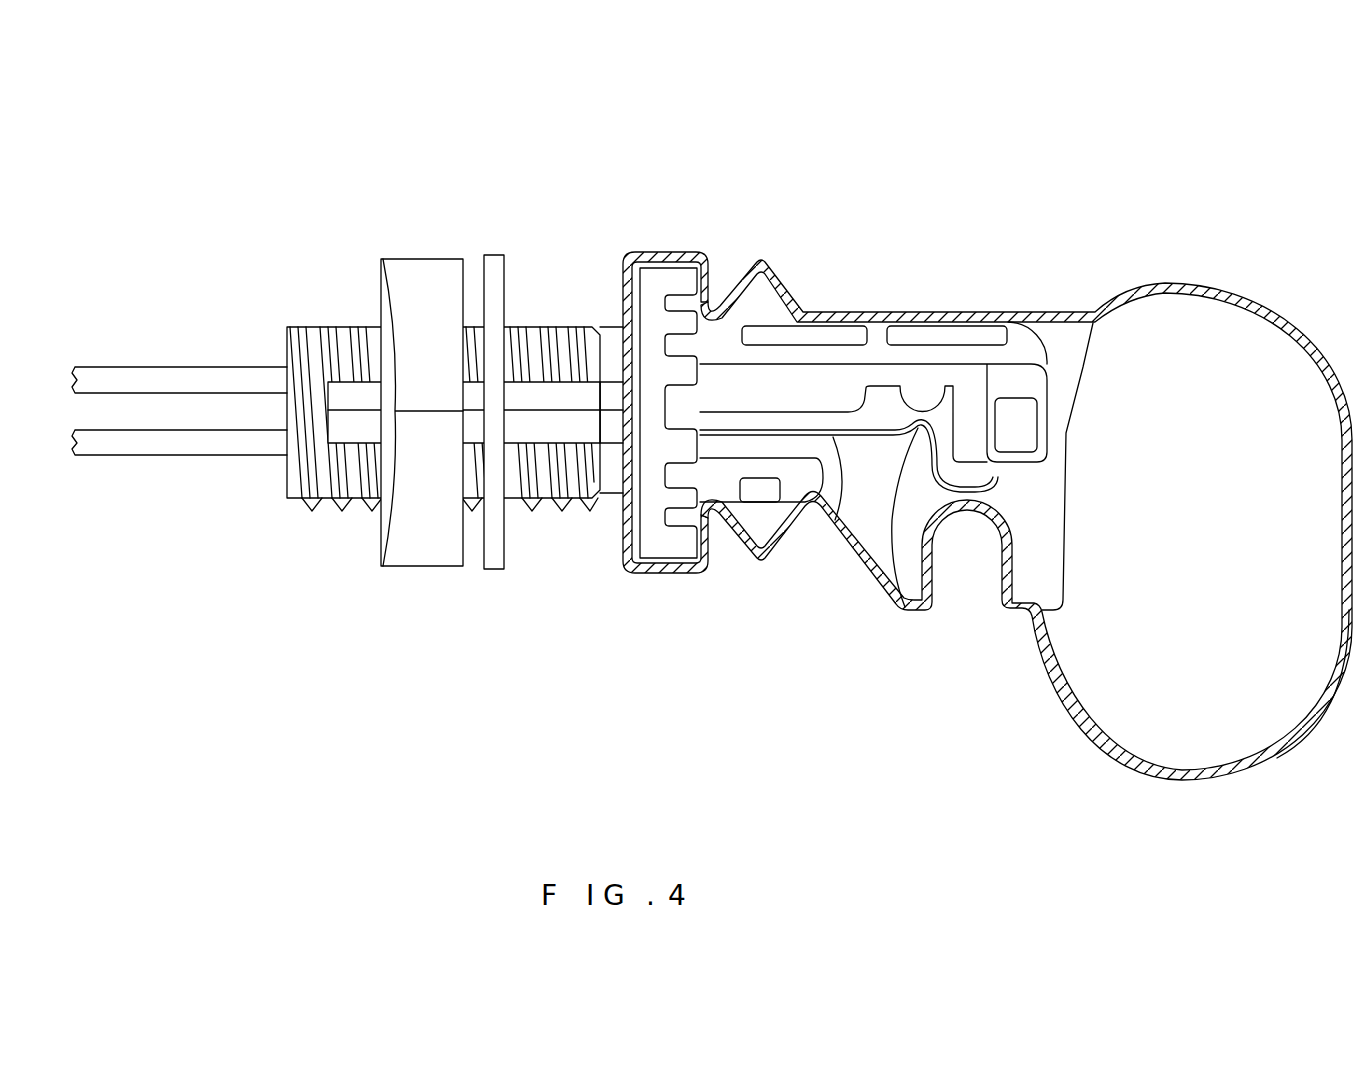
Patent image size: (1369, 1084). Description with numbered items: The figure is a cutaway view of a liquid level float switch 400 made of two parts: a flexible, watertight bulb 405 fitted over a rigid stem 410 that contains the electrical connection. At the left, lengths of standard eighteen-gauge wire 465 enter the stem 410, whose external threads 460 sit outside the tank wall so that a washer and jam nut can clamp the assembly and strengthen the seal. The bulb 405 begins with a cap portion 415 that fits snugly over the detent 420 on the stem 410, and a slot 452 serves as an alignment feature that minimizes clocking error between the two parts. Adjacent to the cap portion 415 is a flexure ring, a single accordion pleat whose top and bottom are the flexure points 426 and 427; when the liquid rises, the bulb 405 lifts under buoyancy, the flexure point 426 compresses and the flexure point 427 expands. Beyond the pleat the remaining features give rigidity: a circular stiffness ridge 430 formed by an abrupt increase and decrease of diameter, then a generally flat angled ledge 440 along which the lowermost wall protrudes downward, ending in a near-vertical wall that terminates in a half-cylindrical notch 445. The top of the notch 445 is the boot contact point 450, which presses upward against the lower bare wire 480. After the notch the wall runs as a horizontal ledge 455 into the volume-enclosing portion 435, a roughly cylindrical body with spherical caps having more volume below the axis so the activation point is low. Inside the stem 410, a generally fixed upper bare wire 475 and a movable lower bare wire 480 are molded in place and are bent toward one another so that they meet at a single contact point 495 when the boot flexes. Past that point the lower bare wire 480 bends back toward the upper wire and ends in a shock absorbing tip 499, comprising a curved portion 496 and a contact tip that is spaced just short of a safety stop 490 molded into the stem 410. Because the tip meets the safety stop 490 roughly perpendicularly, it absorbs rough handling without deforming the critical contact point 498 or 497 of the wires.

The level switch 400 is at (242, 99).
The bulb 405 is at (822, 312).
The stem 410 is at (873, 345).
The cap portion 415 is at (665, 252).
The detent 420 is at (657, 548).
The flexure point 426 is at (720, 308).
The flexure point 427 is at (727, 570).
The circular stiffness ridge 430 is at (762, 262).
The volume-enclosing portion 435 is at (1233, 283).
The angled ledge 440 is at (902, 610).
The cylindrical notch 445 is at (970, 592).
The boot contact point 450 is at (957, 587).
The slot 452 is at (690, 563).
The horizontal ledge 455 is at (1022, 627).
The threads 460 is at (335, 505).
The wire 465 is at (227, 430).
The upper bare wire 475 is at (972, 480).
The lower bare wire 480 is at (877, 575).
The safety stop 490 is at (1013, 463).
The contact point 495 is at (925, 397).
The curved portion 496 is at (968, 490).
The critical contact point 497 is at (870, 440).
The critical contact point 498 is at (900, 612).
The shock absorbing tip 499 is at (1000, 478).